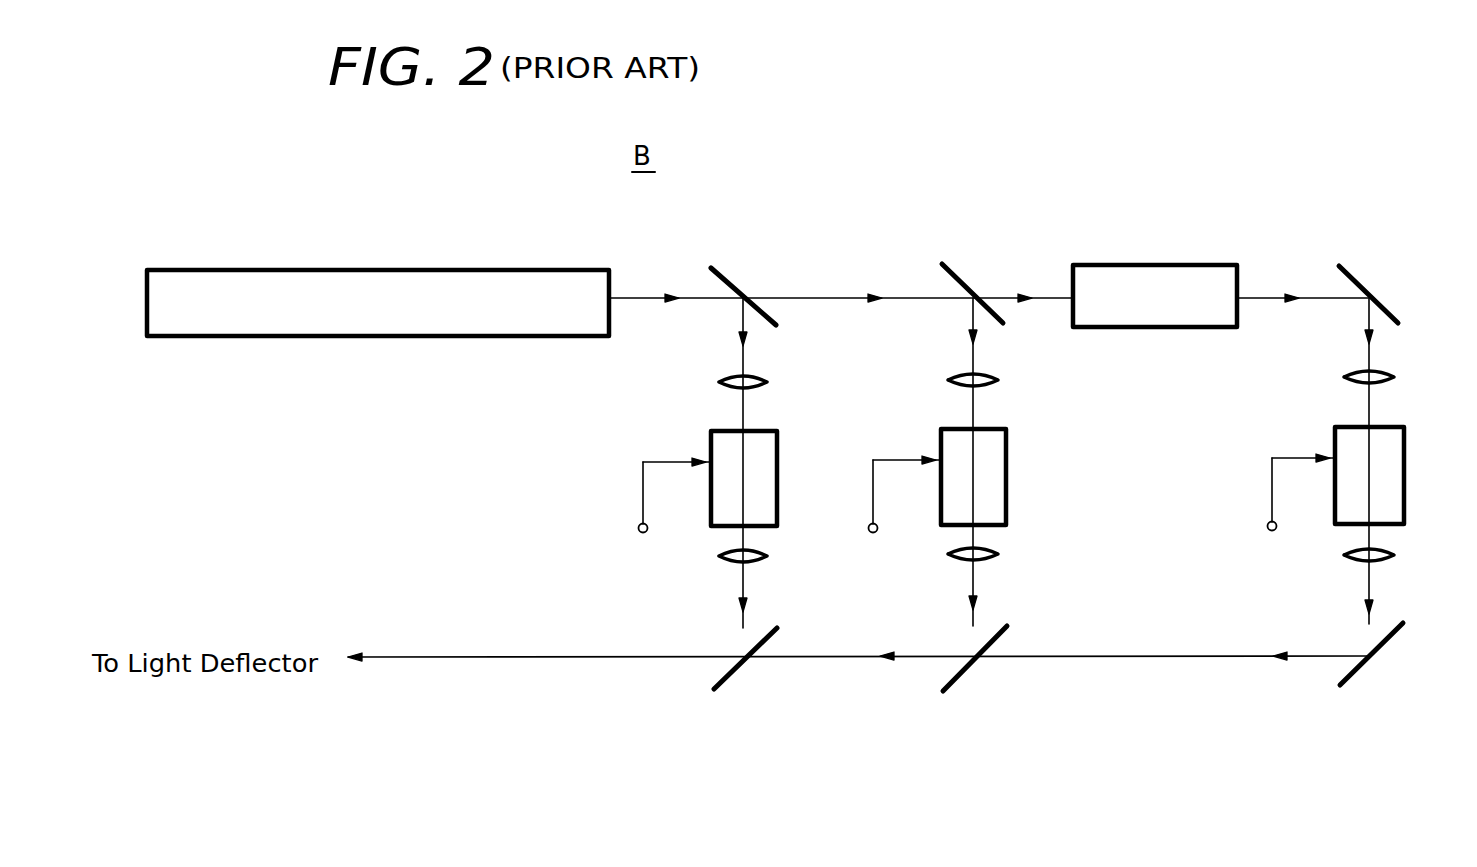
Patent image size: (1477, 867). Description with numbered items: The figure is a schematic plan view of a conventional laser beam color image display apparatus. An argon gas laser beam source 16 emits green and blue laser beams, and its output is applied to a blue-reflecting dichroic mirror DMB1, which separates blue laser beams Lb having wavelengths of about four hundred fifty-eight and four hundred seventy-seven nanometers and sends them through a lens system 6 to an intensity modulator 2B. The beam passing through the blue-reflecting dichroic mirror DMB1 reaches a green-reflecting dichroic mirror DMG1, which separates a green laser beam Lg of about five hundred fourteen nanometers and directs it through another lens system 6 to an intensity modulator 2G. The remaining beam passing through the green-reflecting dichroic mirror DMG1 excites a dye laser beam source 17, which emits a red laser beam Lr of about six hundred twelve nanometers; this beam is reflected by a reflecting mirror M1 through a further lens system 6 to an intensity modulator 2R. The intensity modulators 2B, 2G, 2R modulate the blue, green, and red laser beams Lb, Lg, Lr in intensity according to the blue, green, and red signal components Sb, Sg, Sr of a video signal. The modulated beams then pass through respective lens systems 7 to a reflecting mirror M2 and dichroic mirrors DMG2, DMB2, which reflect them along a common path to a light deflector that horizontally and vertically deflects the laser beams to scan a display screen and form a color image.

The argon gas laser beam source 16 is at (369, 269).
The dye laser beam source 17 is at (1170, 266).
The lens system 6 is at (720, 384).
The lens system 7 is at (724, 566).
The intensity modulator 2B is at (779, 440).
The intensity modulator 2G is at (1008, 436).
The intensity modulator 2R is at (1406, 458).
The blue-reflecting dichroic mirror DMB1 is at (727, 274).
The green-reflecting dichroic mirror DMG1 is at (956, 274).
The dichroic mirror DMB2 is at (728, 680).
The dichroic mirror DMG2 is at (958, 680).
The reflecting mirror M1 is at (1356, 270).
The reflecting mirror M2 is at (1358, 668).
The blue laser beams Lb is at (742, 318).
The green laser beam Lg is at (973, 322).
The red laser beam Lr is at (1368, 318).
The blue signal component Sb is at (643, 516).
The green signal component Sg is at (876, 516).
The red signal component Sr is at (1272, 514).